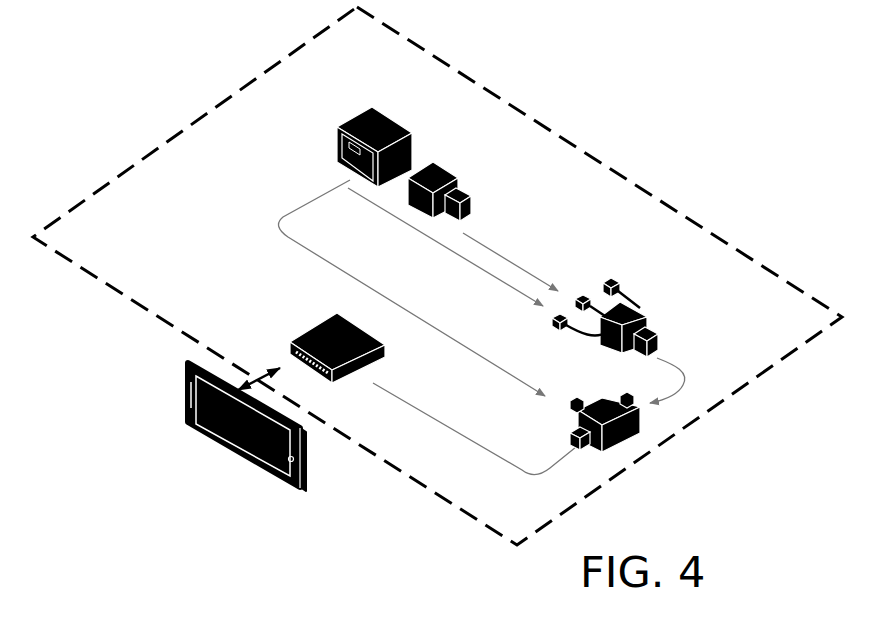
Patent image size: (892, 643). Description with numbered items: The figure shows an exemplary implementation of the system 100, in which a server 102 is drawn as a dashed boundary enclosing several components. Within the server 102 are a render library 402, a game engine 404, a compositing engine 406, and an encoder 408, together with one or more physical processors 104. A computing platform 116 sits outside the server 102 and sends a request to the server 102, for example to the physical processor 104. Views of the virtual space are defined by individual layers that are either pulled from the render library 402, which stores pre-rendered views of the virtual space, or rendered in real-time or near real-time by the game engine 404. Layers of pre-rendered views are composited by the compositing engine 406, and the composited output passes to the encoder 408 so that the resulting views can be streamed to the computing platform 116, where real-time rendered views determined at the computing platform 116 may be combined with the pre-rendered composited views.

The system 100 is at (602, 118).
The server 102 is at (130, 251).
The physical processor 104 is at (282, 343).
The computing platform 116 is at (195, 465).
The render library 402 is at (363, 90).
The game engine 404 is at (420, 145).
The compositing engine 406 is at (647, 303).
The encoder 408 is at (627, 430).